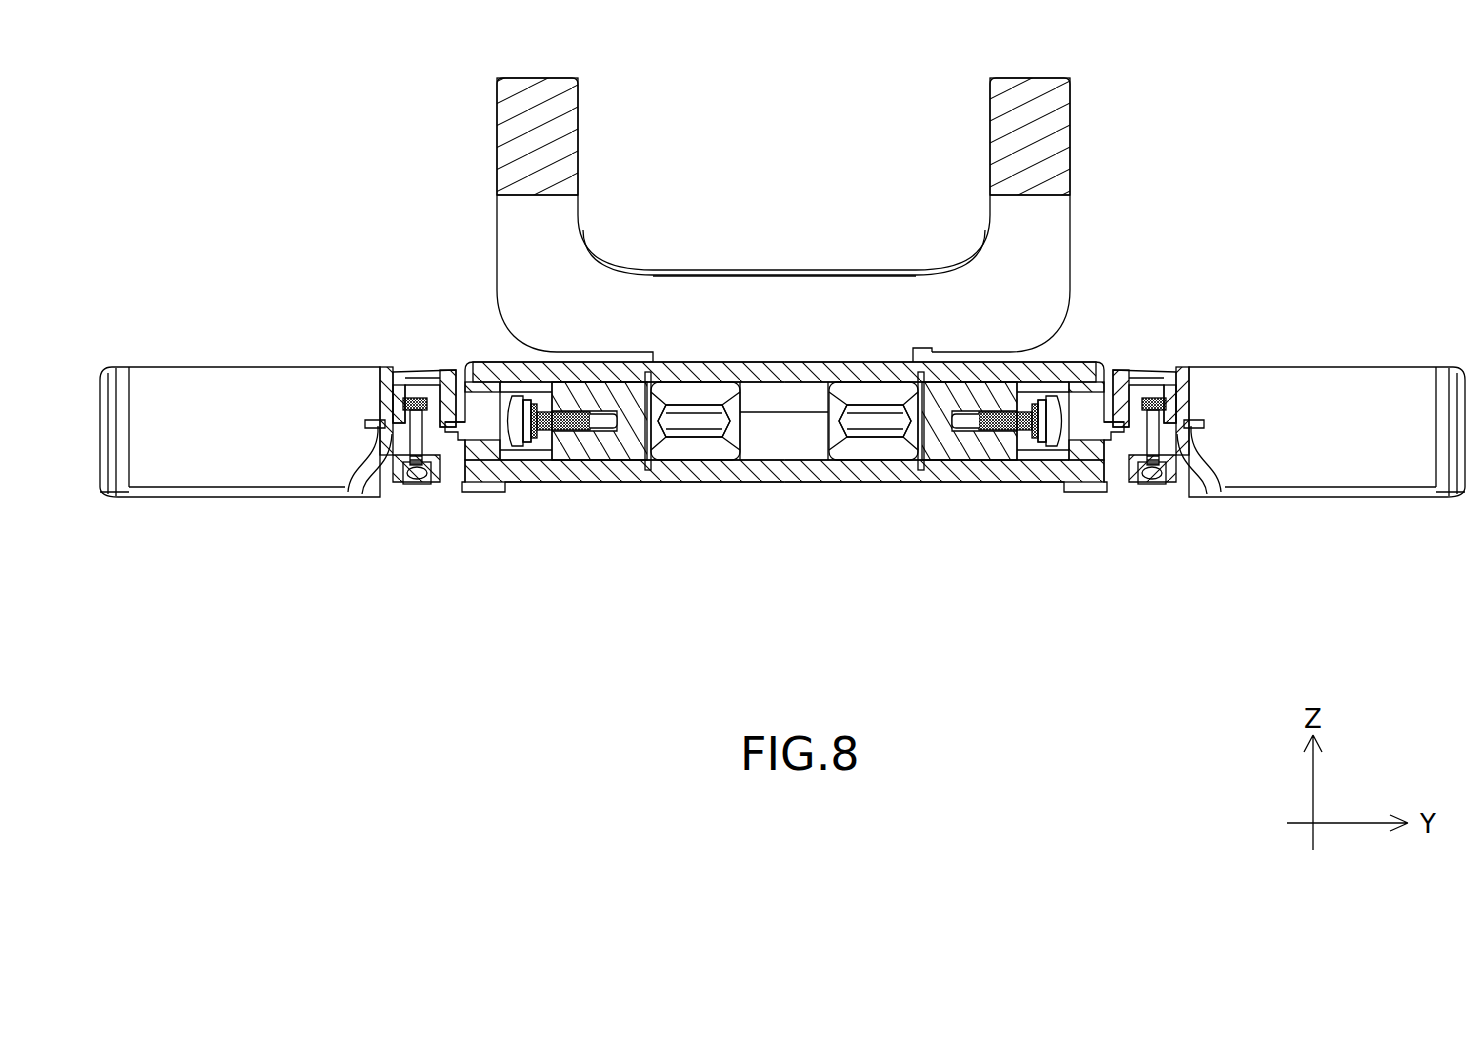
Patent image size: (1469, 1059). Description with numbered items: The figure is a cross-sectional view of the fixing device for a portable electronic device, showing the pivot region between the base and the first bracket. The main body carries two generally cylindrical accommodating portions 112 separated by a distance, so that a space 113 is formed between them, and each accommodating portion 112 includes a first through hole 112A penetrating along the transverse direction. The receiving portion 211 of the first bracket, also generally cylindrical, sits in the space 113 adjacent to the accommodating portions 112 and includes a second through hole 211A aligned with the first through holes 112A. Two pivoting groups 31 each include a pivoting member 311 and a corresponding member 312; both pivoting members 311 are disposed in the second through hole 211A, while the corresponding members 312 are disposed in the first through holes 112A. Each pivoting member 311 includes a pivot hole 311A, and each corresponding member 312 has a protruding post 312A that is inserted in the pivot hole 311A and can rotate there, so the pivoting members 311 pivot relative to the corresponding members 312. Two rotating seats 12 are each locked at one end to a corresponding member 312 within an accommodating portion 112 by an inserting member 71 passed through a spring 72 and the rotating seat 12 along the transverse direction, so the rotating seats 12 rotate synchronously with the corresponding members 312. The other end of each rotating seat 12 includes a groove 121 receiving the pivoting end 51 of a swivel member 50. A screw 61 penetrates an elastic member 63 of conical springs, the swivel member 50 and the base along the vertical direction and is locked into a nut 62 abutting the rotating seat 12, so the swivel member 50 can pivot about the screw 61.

The rotating seat 12 is at (1178, 462).
The groove 121 is at (1125, 448).
The pivoting group 31 is at (575, 548).
The swivel member 50 is at (197, 365).
The pivoting end 51 is at (390, 370).
The screw 61 is at (437, 388).
The nut 62 is at (403, 485).
The elastic member 63 is at (400, 410).
The inserting member 71 is at (1000, 433).
The spring 72 is at (1043, 444).
The accommodating portion 112 is at (507, 487).
The first through hole 112A is at (484, 390).
The space 113 is at (925, 355).
The receiving portion 211 is at (849, 372).
The second through hole 211A is at (777, 404).
The pivoting member 311 is at (673, 451).
The pivot hole 311A is at (713, 442).
The corresponding member 312 is at (611, 451).
The protruding post 312A is at (676, 392).